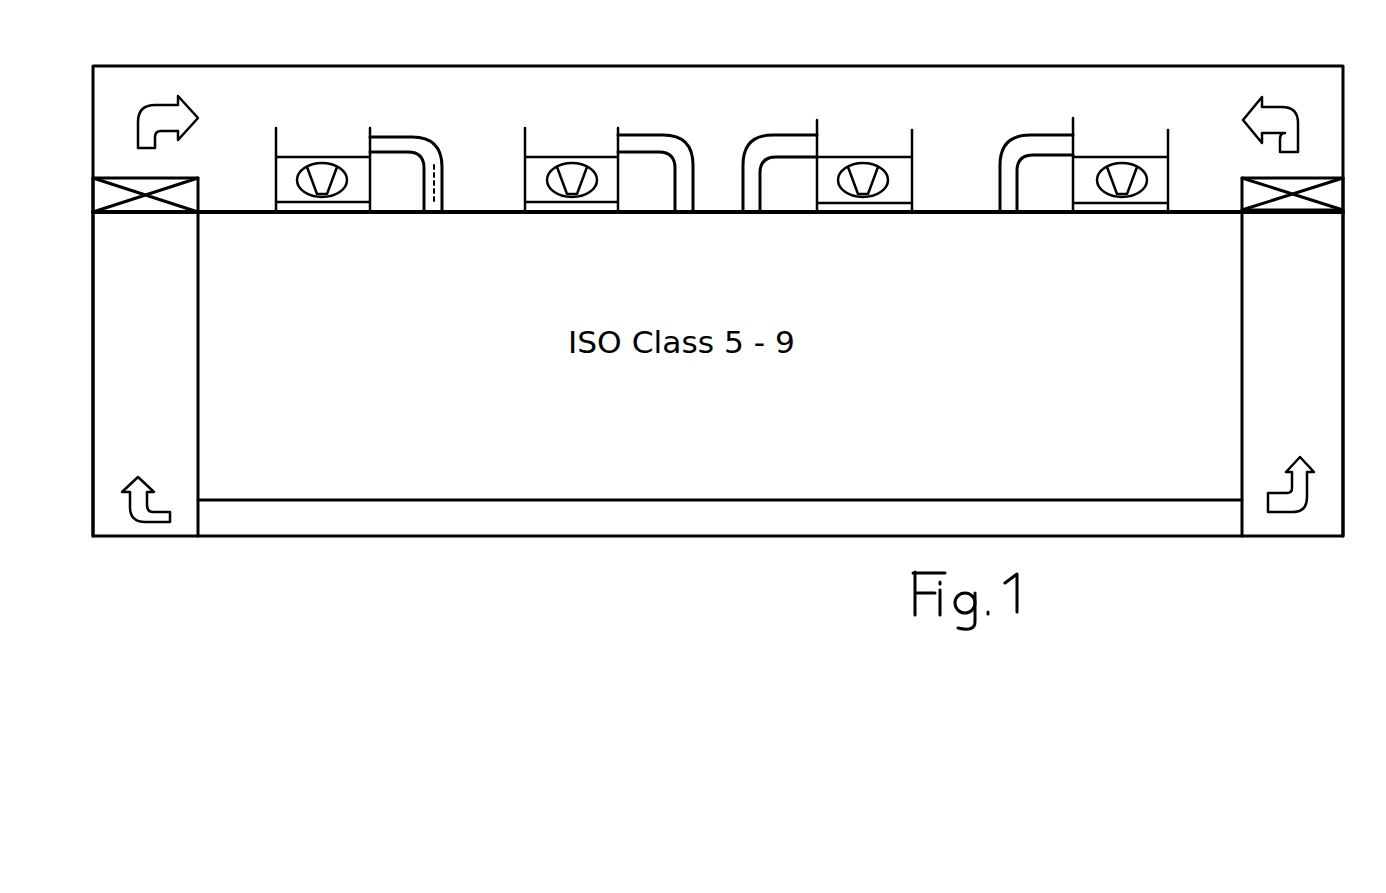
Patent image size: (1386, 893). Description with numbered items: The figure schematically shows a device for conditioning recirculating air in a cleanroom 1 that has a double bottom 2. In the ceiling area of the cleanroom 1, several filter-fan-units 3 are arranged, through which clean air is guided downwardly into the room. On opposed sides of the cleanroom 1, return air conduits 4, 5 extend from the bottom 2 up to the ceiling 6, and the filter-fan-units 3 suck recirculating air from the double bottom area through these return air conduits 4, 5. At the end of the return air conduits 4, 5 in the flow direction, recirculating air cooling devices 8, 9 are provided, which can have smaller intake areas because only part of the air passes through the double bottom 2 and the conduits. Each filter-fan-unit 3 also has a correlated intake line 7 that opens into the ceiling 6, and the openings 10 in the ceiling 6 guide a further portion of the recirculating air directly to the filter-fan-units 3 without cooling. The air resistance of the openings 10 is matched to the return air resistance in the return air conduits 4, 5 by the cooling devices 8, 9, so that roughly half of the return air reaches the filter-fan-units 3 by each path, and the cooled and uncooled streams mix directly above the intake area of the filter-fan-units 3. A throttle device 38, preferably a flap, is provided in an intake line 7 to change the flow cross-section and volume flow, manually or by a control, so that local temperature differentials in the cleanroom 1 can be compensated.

The cleanroom 1 is at (1041, 400).
The double bottom 2 is at (747, 503).
The filter-fan-unit 3 is at (335, 127).
The return air conduit 4 is at (162, 375).
The return air conduit 5 is at (1265, 335).
The ceiling 6 is at (957, 214).
The intake line 7 is at (413, 140).
The recirculating air cooling device 8 is at (147, 207).
The recirculating air cooling device 9 is at (1298, 195).
The opening 10 is at (433, 217).
The throttle device 38 is at (451, 147).